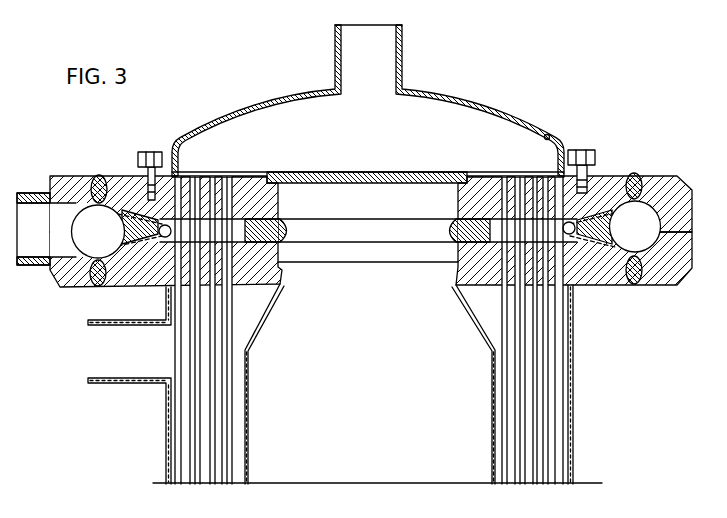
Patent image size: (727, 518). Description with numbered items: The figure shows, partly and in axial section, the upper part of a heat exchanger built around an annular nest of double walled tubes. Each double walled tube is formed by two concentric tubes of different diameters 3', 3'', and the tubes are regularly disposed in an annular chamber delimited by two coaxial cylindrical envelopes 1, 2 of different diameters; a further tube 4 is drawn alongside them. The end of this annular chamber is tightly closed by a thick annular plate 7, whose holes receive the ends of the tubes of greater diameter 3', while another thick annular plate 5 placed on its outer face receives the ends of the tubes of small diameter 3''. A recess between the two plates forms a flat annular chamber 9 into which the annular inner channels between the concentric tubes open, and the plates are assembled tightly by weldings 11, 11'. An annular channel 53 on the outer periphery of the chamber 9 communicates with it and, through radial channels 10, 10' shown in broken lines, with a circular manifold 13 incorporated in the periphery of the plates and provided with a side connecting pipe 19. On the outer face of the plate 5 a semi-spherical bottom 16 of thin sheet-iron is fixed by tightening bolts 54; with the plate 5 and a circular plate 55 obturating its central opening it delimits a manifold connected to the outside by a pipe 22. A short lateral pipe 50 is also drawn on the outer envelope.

The cylindrical envelope 1 is at (173, 436).
The cylindrical envelope 2 is at (247, 444).
The tube of greater diameter 3' is at (365, 330).
The tube of small diameter 3'' is at (367, 330).
The tube 4 is at (218, 473).
The thick annular plate 5 is at (125, 183).
The thick annular plate 7 is at (125, 278).
The flat annular chamber 9 is at (222, 237).
The radial channel 10 is at (351, 185).
The radial channel 10' is at (198, 266).
The welding 11 is at (350, 181).
The welding 11' is at (429, 253).
The circular manifold 13 is at (92, 247).
The dome cover 16 is at (463, 100).
The side connecting pipe 19 is at (28, 248).
The pipe 22 is at (336, 48).
The side pipe 50 is at (107, 360).
The annular channel 53 is at (166, 226).
The tightening bolt 54 is at (147, 153).
The circular plate 55 is at (385, 175).